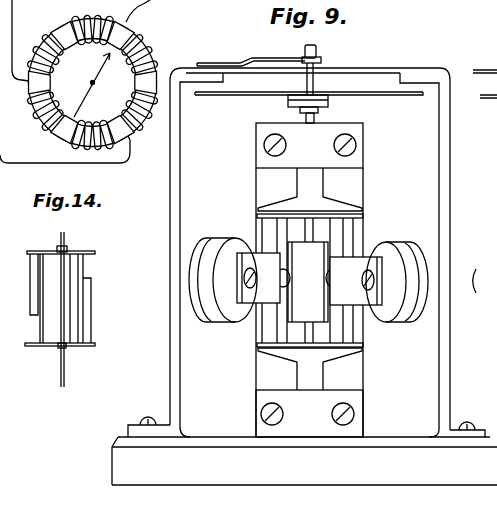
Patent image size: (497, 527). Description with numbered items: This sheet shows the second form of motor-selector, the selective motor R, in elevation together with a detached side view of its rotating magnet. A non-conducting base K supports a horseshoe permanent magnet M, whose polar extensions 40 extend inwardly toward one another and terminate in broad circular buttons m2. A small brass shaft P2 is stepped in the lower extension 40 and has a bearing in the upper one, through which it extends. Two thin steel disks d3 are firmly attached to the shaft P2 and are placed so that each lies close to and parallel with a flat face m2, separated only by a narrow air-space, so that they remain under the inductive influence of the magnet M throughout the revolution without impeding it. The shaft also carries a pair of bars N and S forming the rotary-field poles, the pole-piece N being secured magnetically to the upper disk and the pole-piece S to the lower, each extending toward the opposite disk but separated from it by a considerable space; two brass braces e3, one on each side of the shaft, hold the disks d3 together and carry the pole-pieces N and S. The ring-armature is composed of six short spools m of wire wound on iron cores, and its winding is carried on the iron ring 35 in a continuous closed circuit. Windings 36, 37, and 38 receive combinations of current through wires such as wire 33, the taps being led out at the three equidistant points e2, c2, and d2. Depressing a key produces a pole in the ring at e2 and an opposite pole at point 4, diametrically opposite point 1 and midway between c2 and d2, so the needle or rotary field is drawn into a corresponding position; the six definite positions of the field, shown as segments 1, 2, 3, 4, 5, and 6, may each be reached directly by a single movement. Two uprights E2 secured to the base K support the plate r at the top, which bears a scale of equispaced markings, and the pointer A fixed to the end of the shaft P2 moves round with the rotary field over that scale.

In FIG. 9, the selective motor R is at (93, 82).
In FIG. 9, the pole point 1 is at (120, 35).
In FIG. 9, the commutator segment 2 is at (146, 82).
In FIG. 9, the commutator segment 3 is at (120, 129).
In FIG. 9, the pole point 4 is at (64, 129).
In FIG. 9, the commutator segment 5 is at (40, 82).
In FIG. 9, the commutator segment 6 is at (64, 35).
In FIG. 9, the pole-piece S is at (76, 110).
In FIG. 14, the pole-piece S is at (93, 298).
In FIG. 9, the tap point c2 is at (15, 49).
In FIG. 9, the tap point d2 is at (75, 149).
In FIG. 9, the tap point e2 is at (138, 11).
In FIG. 9, the wire 33 is at (20, 14).
In FIG. 9, the iron ring 35 is at (50, 139).
In FIG. 9, the winding 36 is at (32, 125).
In FIG. 9, the winding 37 is at (53, 26).
In FIG. 9, the winding 38 is at (158, 60).
In FIG. 9, the uprights E2 is at (176, 200).
In FIG. 9, the plate r is at (389, 68).
In FIG. 9, the pointer A is at (223, 62).
In FIG. 9, the brass shaft P2 is at (320, 118).
In FIG. 14, the brass shaft P2 is at (67, 246).
In FIG. 9, the horseshoe permanent magnet M is at (371, 147).
In FIG. 9, the polar extensions 40 is at (306, 270).
In FIG. 9, the circular buttons m2 is at (347, 196).
In FIG. 9, the steel disks d3 is at (360, 216).
In FIG. 14, the steel disks d3 is at (88, 251).
In FIG. 9, the pole-piece N is at (355, 238).
In FIG. 14, the pole-piece N is at (25, 284).
In FIG. 9, the spools m is at (308, 274).
In FIG. 9, the non-conducting base K is at (304, 461).
In FIG. 14, the braces e3 is at (85, 270).